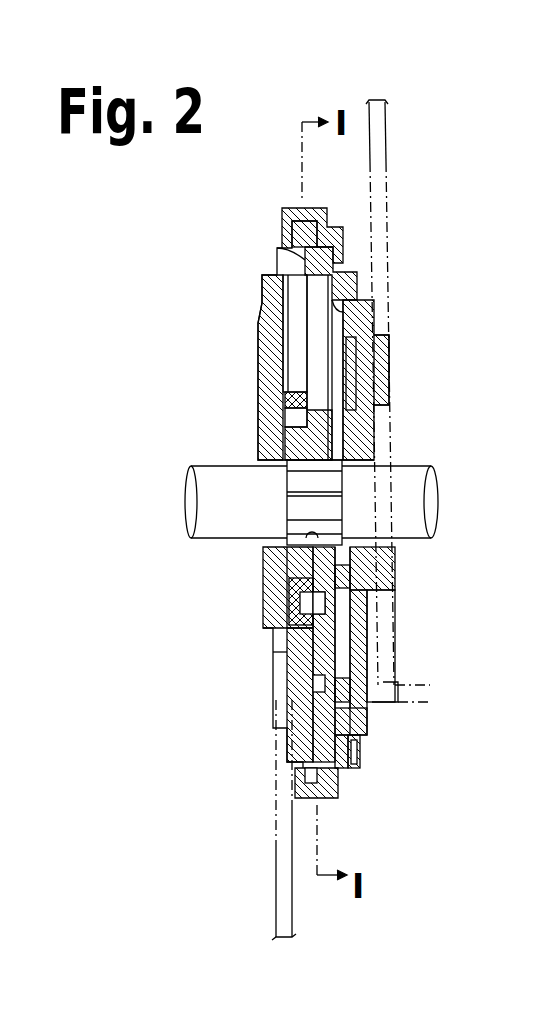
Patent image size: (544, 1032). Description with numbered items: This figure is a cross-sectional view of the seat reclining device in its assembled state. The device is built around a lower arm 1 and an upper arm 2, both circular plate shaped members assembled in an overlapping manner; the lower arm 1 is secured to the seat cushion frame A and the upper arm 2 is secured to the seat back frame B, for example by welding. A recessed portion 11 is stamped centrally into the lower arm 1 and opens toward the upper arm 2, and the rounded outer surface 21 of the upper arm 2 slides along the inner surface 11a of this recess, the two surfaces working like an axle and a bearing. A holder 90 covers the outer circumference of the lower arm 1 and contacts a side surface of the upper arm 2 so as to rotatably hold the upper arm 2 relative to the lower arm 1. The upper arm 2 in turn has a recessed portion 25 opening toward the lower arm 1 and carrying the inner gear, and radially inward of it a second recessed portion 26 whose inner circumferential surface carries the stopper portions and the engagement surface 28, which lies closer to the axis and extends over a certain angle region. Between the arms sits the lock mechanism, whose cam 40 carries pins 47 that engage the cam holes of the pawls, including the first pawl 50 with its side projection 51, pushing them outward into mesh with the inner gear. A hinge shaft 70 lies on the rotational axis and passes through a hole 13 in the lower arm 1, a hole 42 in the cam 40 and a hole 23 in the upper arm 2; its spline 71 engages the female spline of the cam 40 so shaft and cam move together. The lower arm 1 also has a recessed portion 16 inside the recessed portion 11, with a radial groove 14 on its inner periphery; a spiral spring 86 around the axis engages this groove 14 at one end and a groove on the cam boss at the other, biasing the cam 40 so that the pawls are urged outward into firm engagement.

The lower arm 1 is at (268, 282).
The upper arm 2 is at (345, 285).
The recessed portion 11 is at (300, 320).
The inner surface 11a is at (277, 256).
The hole 13 is at (305, 540).
The groove 14 is at (294, 360).
The recessed portion 16 is at (290, 408).
The outer surface 21 is at (358, 760).
The hole 23 is at (370, 540).
The recessed portion 25 is at (323, 353).
The second recessed portion 26 is at (340, 390).
The engagement surface 28 is at (340, 330).
The cam 40 is at (290, 425).
The hole 42 is at (315, 577).
The pin 47 is at (340, 603).
The first pawl 50 is at (363, 713).
The projection 51 is at (360, 677).
The hinge shaft 70 is at (200, 490).
The spline 71 is at (302, 485).
The spiral spring 86 is at (300, 605).
The holder 90 is at (340, 800).
The seat cushion frame A is at (275, 848).
The seat back frame B is at (386, 160).